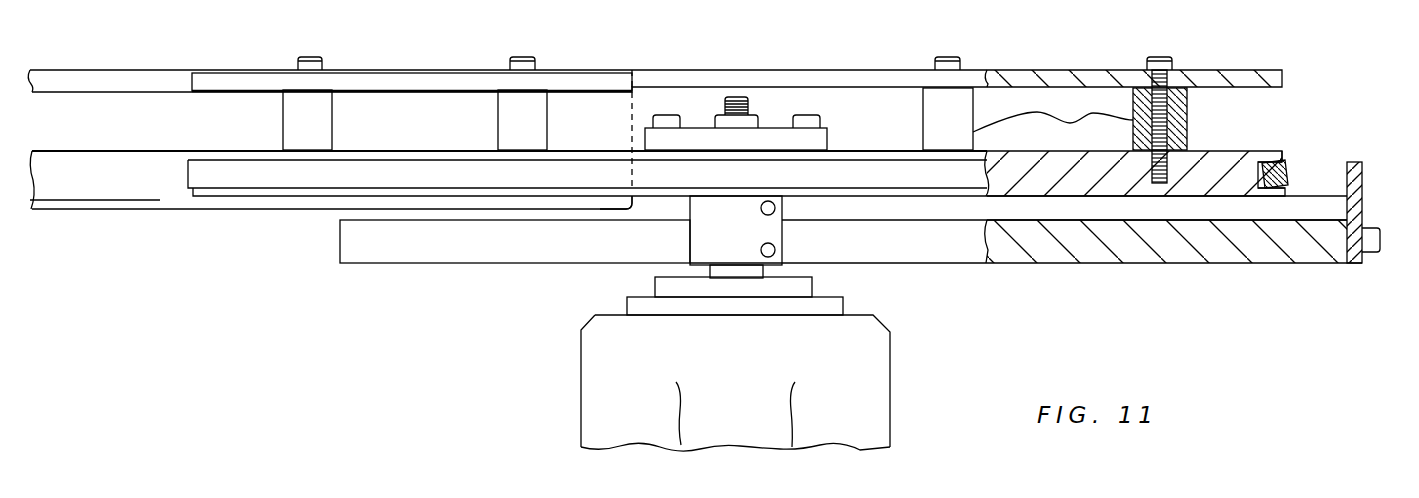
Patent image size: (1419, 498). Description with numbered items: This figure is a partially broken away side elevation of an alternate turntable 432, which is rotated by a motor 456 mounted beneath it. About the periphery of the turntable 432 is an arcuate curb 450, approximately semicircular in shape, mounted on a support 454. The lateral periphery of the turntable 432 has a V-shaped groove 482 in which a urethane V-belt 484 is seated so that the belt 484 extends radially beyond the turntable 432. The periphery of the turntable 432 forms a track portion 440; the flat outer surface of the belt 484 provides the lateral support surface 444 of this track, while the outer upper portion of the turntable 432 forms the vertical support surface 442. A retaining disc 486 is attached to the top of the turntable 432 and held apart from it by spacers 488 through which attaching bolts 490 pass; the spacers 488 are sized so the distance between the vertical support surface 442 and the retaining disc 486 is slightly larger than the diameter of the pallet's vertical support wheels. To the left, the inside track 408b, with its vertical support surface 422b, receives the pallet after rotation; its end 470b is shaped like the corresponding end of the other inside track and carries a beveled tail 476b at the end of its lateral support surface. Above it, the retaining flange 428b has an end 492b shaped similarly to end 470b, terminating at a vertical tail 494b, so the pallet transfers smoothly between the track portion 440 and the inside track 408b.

The retaining flange 428b is at (162, 64).
The retaining disc 486 is at (1067, 69).
The end of retaining flange 492b is at (576, 65).
The vertical tail 494b is at (632, 74).
The attaching bolts 490 is at (950, 56).
The spacers 488 is at (1080, 119).
The inside track 408b is at (124, 145).
The vertical support surface 422b is at (173, 198).
The turntable 432 is at (1060, 197).
The urethane V-belt 484 is at (1296, 170).
The vertical support surface 442 is at (1265, 150).
The track portion 440 is at (1303, 129).
The V-shaped groove 482 is at (1265, 189).
The lateral support surface 444 is at (1292, 175).
The beveled tail 476b is at (632, 203).
The end of inside track 470b is at (572, 214).
The support 454 is at (1110, 255).
The arcuate curb 450 is at (1372, 176).
The motor 456 is at (754, 378).